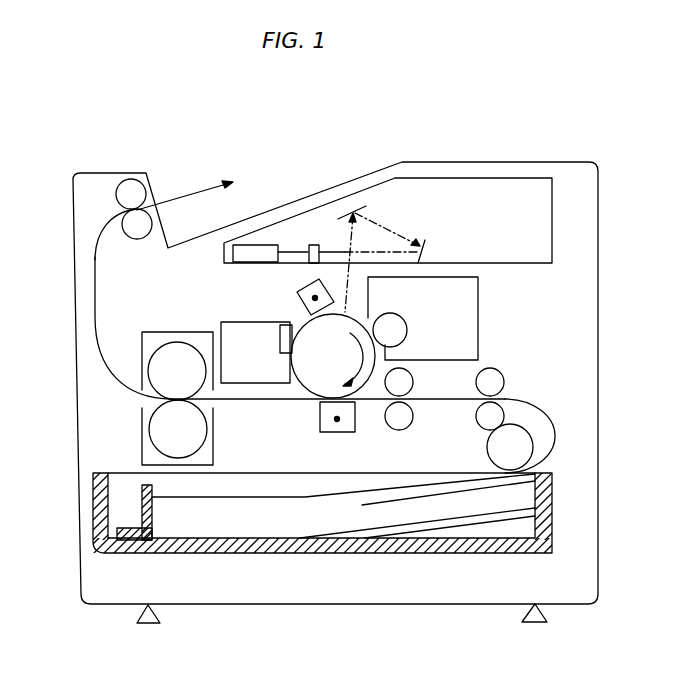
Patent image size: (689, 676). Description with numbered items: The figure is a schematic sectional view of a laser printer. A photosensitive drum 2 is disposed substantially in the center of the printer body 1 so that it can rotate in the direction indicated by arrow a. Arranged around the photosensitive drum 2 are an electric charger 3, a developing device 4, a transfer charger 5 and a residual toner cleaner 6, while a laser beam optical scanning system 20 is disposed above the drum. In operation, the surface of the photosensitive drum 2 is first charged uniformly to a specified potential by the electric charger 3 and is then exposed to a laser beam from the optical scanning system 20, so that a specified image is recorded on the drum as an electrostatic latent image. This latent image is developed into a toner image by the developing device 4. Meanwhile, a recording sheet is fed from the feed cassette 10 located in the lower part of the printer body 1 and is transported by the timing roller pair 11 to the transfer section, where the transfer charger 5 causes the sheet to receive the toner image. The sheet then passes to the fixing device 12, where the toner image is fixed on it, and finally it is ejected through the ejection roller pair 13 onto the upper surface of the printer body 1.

The printer body 1 is at (600, 283).
The photosensitive drum 2 is at (319, 384).
The electric charger 3 is at (298, 292).
The developing device 4 is at (480, 304).
The transfer charger 5 is at (332, 434).
The residual toner cleaner 6 is at (232, 322).
The feed cassette 10 is at (380, 556).
The timing roller pair 11 is at (412, 425).
The fixing device 12 is at (140, 420).
The ejection roller pair 13 is at (128, 180).
The laser beam optical scanning system 20 is at (447, 179).
The arrow a is at (344, 362).